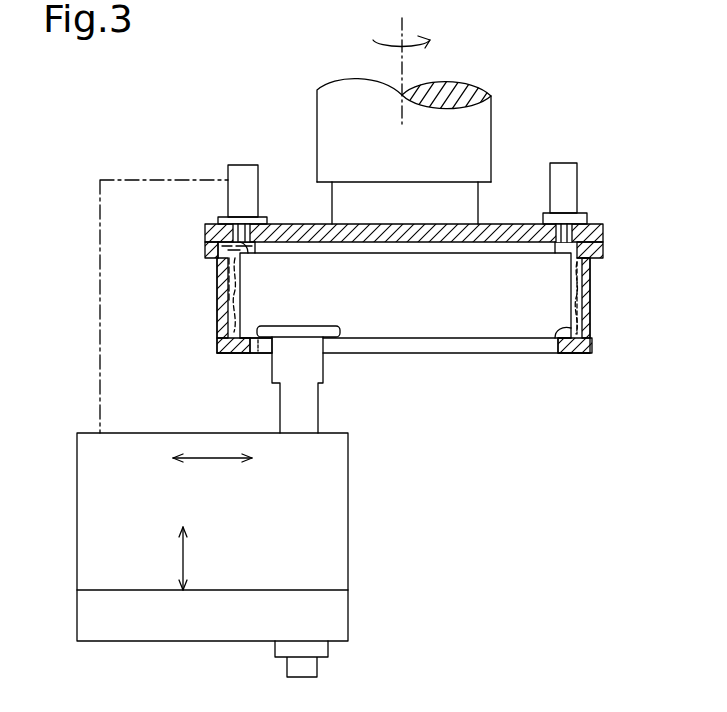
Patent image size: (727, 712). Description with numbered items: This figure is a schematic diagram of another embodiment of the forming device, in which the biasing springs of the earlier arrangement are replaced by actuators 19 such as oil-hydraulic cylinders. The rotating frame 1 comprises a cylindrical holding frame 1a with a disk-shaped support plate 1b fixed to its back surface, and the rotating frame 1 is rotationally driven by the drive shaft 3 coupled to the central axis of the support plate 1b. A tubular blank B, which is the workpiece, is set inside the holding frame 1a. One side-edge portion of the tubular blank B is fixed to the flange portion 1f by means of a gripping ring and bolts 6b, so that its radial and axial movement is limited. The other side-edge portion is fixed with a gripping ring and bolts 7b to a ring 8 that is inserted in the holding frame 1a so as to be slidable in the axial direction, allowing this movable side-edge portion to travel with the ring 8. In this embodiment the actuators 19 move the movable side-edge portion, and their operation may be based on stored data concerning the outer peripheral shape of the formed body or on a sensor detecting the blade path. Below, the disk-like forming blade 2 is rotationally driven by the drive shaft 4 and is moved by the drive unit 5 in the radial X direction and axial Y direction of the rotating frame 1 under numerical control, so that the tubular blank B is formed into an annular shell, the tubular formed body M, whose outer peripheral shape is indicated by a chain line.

The rotating frame 1 is at (593, 282).
The holding frame 1a is at (578, 310).
The support plate 1b is at (515, 224).
The flange portion 1f is at (242, 350).
The forming blade 2 is at (345, 335).
The drive shaft 3 is at (481, 132).
The drive shaft 4 is at (320, 398).
The drive unit 5 is at (348, 532).
The bolts 6b is at (222, 353).
The bolts 7b is at (217, 252).
The ring 8 is at (218, 268).
The actuators 19 is at (243, 172).
The tubular formed body M is at (595, 307).
The tubular blank B is at (557, 328).